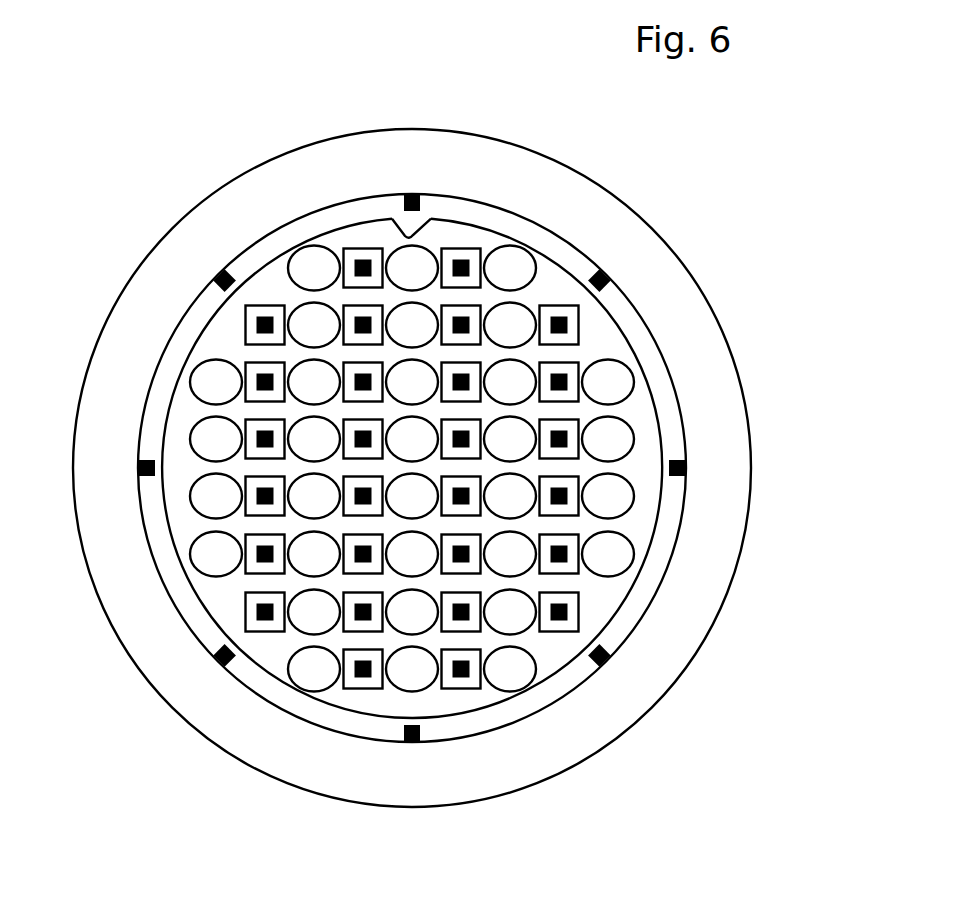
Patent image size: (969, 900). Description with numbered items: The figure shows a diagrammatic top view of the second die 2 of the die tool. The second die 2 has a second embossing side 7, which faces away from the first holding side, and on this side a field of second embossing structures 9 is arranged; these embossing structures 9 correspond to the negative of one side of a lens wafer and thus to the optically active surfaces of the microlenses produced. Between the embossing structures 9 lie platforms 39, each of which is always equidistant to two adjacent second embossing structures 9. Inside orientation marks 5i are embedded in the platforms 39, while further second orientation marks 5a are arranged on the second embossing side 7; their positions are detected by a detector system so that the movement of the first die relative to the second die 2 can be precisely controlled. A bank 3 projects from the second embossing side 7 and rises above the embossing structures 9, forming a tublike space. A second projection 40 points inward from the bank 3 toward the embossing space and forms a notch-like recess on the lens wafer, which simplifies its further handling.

The second die 2 is at (88, 213).
The bank 3 is at (148, 425).
The second orientation mark 5a is at (688, 460).
The inside orientation mark 5i is at (568, 614).
The second embossing side 7 is at (645, 475).
The second embossing structures 9 is at (303, 267).
The platform 39 is at (567, 337).
The second projection 40 is at (412, 227).